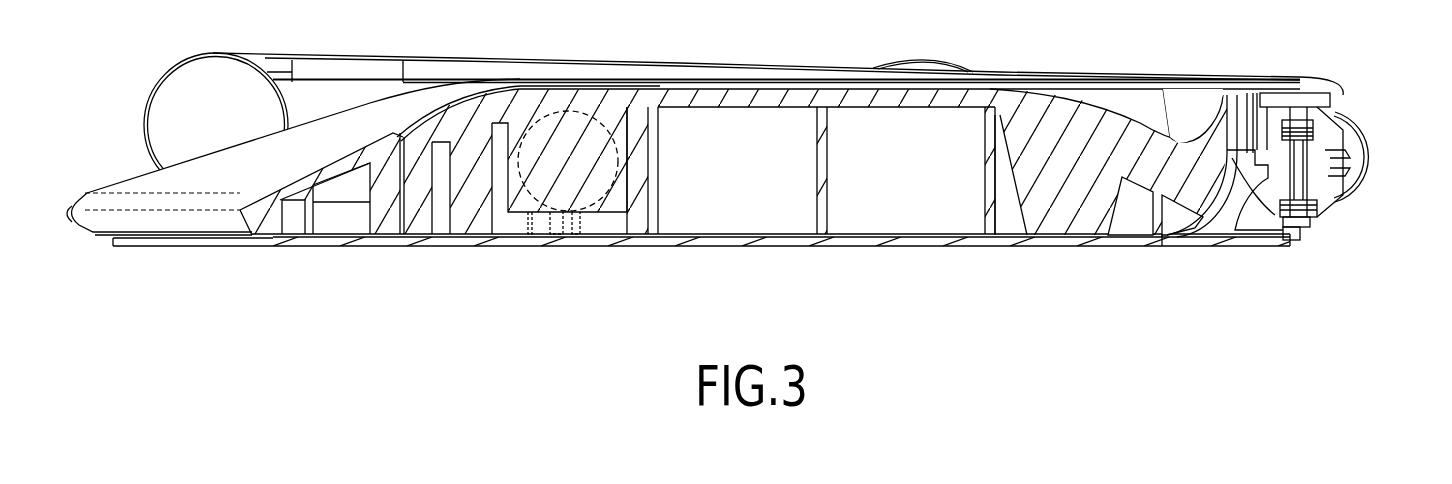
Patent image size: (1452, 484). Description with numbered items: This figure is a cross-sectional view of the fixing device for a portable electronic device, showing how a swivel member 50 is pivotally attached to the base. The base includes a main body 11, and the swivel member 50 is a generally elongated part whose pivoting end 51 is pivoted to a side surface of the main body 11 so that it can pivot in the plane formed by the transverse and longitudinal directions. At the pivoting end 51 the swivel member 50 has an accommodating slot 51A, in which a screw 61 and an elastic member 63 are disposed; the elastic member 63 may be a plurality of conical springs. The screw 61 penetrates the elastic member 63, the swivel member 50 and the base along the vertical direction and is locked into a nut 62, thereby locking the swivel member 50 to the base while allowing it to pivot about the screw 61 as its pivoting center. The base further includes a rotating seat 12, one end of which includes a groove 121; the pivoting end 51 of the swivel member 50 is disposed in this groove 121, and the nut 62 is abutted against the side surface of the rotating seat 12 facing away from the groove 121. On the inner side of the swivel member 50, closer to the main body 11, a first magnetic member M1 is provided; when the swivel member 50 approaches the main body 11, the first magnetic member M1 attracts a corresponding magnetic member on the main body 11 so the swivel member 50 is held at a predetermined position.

The main body 11 is at (227, 170).
The first magnetic member M1 is at (592, 183).
The swivel member 50 is at (828, 197).
The accommodating slot 51A is at (1320, 118).
The pivoting end 51 is at (1350, 130).
The elastic member 63 is at (1350, 170).
The rotating seat 12 is at (1337, 180).
The groove 121 is at (1320, 180).
The nut 62 is at (1278, 215).
The screw 61 is at (1290, 163).